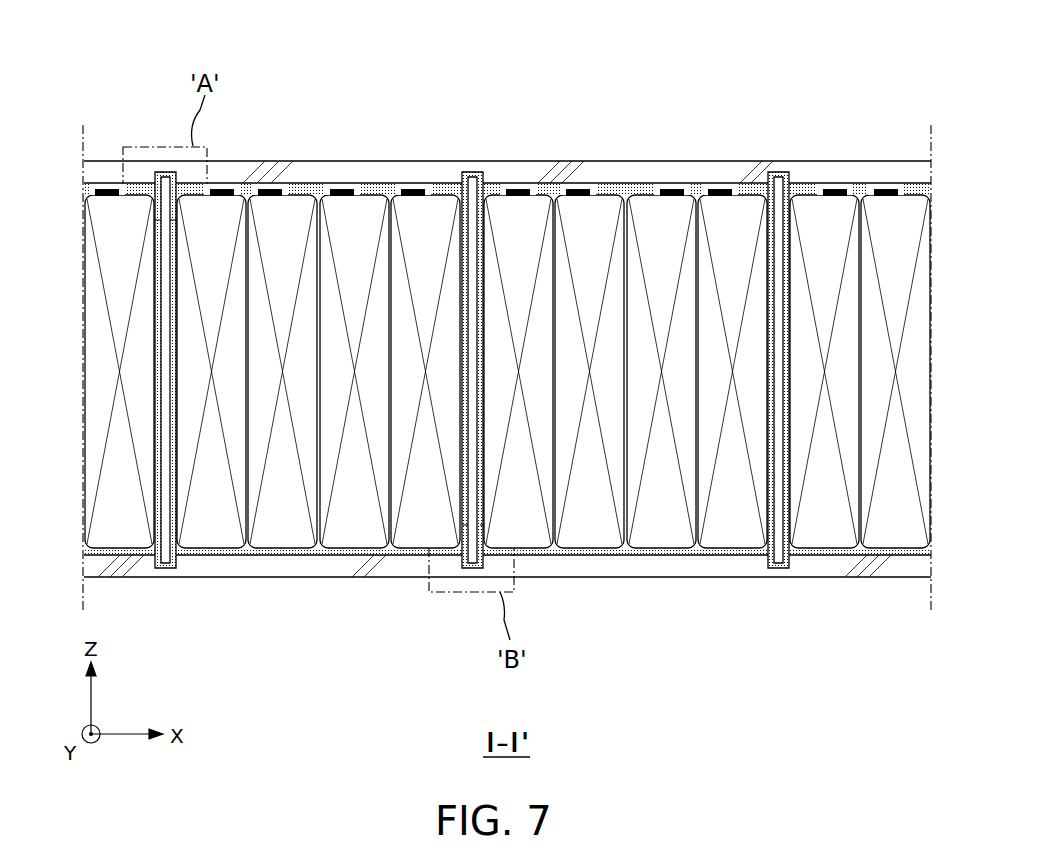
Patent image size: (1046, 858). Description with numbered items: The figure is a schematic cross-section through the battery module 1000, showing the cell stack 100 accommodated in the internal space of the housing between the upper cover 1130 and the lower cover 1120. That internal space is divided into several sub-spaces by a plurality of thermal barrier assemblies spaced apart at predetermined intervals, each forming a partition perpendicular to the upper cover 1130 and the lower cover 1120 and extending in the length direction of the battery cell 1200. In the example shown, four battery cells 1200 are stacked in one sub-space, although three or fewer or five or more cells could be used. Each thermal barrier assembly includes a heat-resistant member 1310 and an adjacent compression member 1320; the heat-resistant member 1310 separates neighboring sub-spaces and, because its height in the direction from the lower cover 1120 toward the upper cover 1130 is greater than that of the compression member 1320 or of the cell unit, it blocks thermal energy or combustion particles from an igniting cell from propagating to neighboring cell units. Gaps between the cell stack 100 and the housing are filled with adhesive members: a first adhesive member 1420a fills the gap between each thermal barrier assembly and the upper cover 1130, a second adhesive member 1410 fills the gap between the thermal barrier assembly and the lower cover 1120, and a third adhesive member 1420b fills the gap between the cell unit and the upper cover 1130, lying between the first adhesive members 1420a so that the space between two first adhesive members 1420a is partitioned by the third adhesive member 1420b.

The battery module 1000 is at (507, 30).
The cell stack 100 is at (722, 224).
The upper cover 1130 is at (836, 173).
The lower cover 1120 is at (836, 568).
The battery cell 1200 is at (282, 535).
The heat-resistant member 1310 is at (473, 190).
The compression member 1320 is at (465, 260).
The second adhesive member 1410 is at (695, 556).
The first adhesive member 1420a is at (497, 188).
The third adhesive member 1420b is at (626, 190).